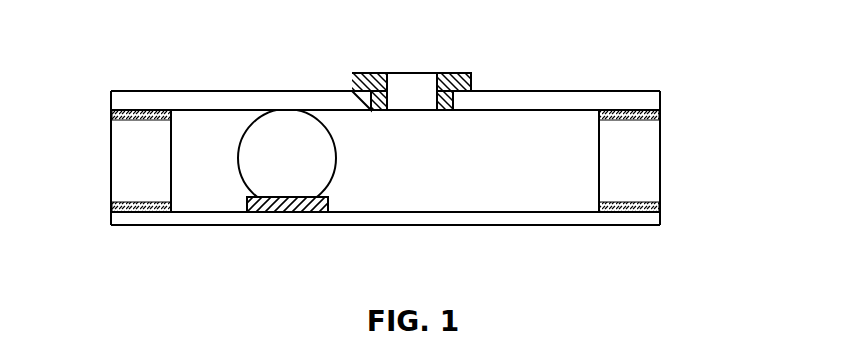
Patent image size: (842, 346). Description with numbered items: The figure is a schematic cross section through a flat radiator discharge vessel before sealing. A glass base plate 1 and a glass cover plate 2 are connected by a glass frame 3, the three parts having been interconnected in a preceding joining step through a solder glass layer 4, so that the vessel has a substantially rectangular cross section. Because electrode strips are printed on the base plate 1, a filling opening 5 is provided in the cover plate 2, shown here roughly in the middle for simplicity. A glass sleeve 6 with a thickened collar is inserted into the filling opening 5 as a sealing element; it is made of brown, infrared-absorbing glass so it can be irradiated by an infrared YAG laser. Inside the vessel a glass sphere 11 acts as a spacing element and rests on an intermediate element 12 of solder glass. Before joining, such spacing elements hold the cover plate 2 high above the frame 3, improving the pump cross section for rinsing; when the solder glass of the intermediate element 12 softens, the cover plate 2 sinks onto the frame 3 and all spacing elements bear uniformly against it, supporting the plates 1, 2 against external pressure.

The base plate 1 is at (510, 217).
The cover plate 2 is at (541, 103).
The frame 3 is at (132, 160).
The solder glass layer 4 is at (110, 113).
The filling opening 5 is at (418, 88).
The glass sleeve 6 is at (369, 85).
The glass sphere 11 is at (288, 138).
The intermediate element 12 is at (290, 205).